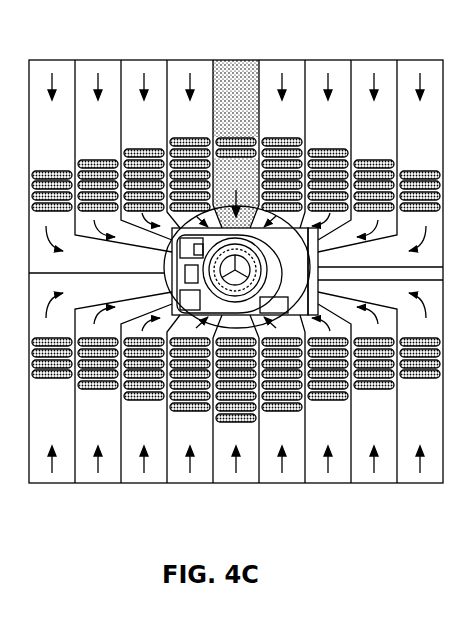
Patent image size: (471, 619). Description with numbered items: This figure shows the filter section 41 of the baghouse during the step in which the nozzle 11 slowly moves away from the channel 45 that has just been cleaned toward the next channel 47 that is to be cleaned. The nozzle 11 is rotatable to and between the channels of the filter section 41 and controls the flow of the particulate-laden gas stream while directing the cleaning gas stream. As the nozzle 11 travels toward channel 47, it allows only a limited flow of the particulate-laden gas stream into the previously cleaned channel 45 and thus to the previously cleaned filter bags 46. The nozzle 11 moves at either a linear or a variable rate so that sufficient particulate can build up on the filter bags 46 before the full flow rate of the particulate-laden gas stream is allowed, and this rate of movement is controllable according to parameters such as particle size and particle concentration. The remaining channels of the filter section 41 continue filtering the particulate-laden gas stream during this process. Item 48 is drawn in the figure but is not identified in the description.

The filter section 41 is at (236, 279).
The channel 45 is at (231, 60).
The filter bags 46 is at (233, 208).
The channel 47 is at (287, 61).
The reaction chamber 48 is at (291, 238).
The nozzle 11 is at (240, 252).